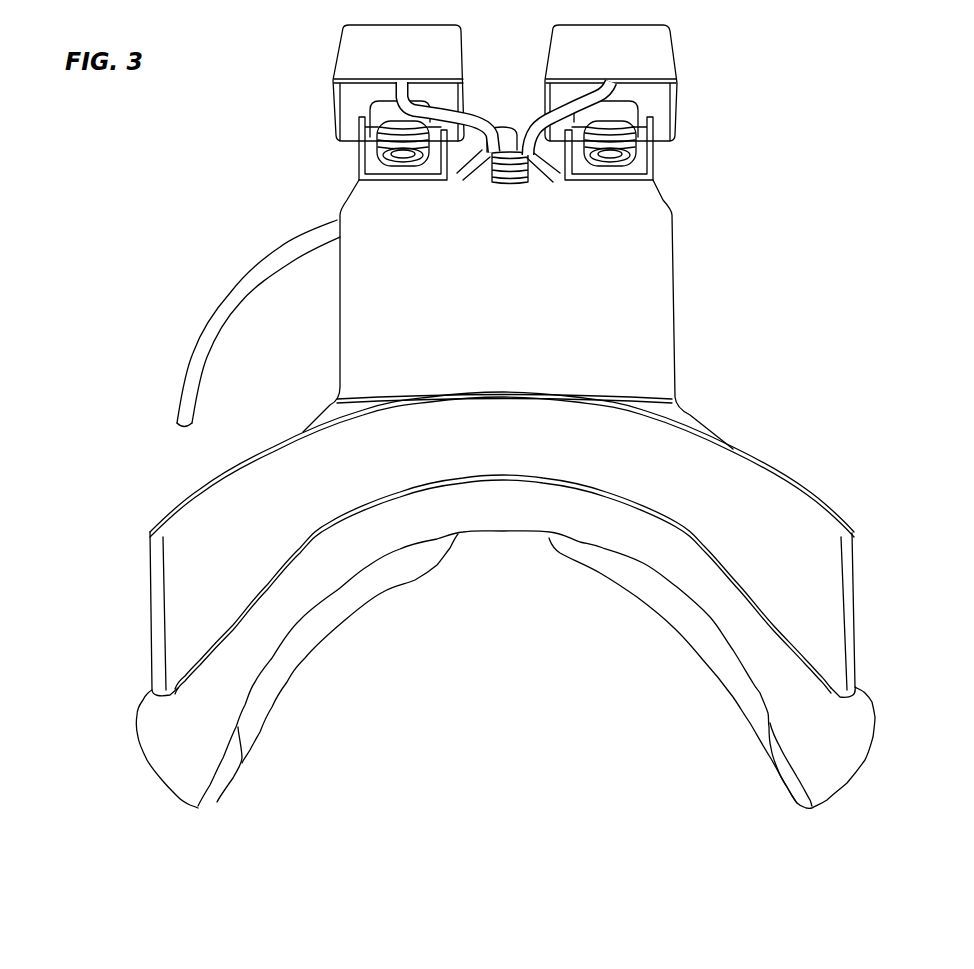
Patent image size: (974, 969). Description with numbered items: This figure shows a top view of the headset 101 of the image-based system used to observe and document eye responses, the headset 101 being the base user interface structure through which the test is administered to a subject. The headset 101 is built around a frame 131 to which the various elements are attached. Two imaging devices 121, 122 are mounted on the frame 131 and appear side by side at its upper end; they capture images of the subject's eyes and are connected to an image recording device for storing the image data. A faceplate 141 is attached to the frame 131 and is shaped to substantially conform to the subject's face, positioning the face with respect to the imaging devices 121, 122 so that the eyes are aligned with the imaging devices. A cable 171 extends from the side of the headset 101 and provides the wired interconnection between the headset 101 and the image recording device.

The headset 101 is at (891, 342).
The imaging device 121 is at (357, 149).
The imaging device 122 is at (653, 150).
The frame 131 is at (675, 318).
The faceplate 141 is at (856, 757).
The cable 171 is at (213, 308).